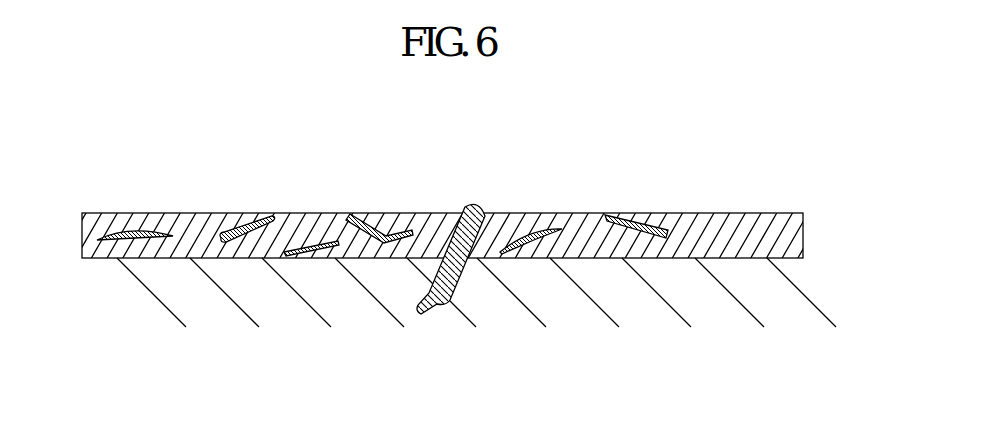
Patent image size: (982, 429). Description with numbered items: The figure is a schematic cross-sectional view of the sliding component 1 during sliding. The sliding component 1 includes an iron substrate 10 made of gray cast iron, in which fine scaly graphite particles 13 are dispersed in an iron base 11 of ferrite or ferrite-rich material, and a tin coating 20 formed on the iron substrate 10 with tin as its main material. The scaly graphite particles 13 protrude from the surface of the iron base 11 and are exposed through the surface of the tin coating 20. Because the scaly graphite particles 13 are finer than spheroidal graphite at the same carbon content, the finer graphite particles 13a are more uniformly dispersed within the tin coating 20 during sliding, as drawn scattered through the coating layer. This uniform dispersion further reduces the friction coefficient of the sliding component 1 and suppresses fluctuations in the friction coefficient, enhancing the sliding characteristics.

The sliding component 1 is at (736, 156).
The iron substrate 10 is at (469, 270).
The iron base 11 is at (285, 308).
The graphite particles 13 is at (445, 312).
The finer graphite particles 13a is at (231, 218).
The tin coating 20 is at (404, 214).